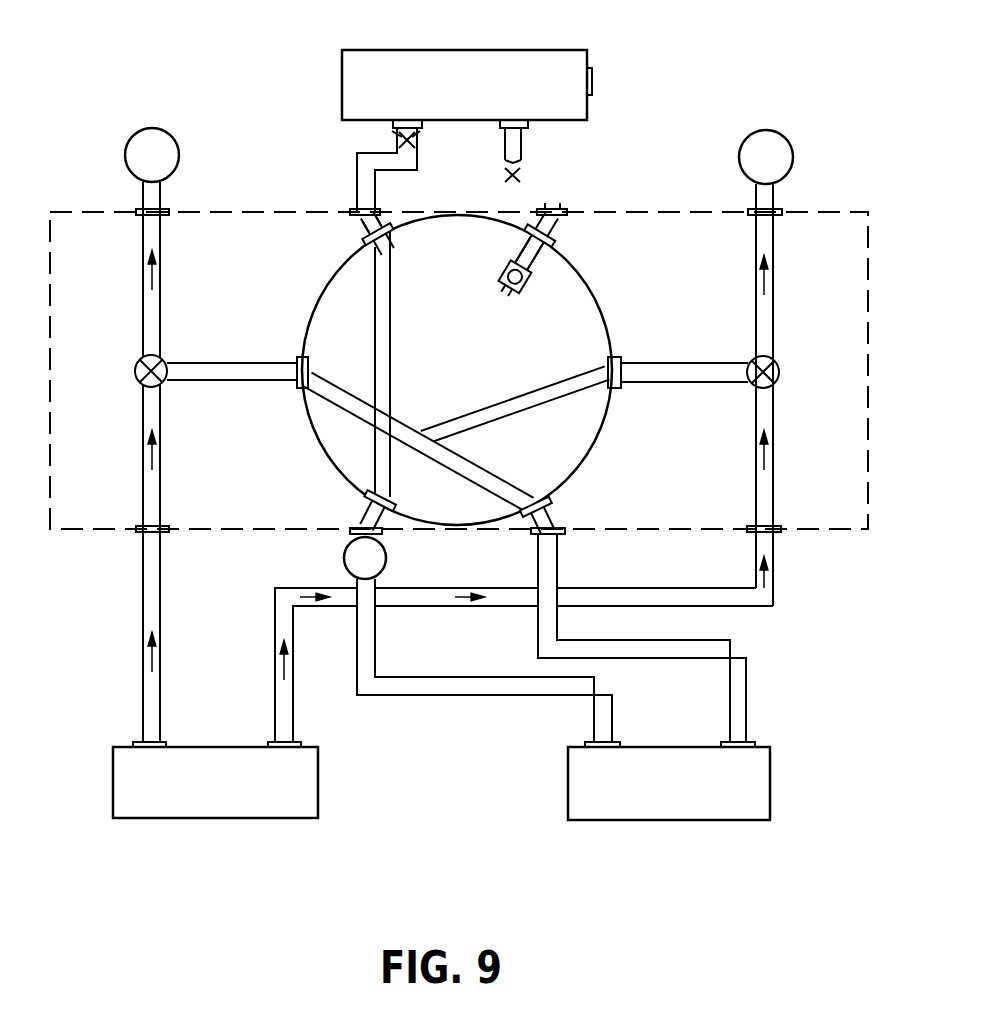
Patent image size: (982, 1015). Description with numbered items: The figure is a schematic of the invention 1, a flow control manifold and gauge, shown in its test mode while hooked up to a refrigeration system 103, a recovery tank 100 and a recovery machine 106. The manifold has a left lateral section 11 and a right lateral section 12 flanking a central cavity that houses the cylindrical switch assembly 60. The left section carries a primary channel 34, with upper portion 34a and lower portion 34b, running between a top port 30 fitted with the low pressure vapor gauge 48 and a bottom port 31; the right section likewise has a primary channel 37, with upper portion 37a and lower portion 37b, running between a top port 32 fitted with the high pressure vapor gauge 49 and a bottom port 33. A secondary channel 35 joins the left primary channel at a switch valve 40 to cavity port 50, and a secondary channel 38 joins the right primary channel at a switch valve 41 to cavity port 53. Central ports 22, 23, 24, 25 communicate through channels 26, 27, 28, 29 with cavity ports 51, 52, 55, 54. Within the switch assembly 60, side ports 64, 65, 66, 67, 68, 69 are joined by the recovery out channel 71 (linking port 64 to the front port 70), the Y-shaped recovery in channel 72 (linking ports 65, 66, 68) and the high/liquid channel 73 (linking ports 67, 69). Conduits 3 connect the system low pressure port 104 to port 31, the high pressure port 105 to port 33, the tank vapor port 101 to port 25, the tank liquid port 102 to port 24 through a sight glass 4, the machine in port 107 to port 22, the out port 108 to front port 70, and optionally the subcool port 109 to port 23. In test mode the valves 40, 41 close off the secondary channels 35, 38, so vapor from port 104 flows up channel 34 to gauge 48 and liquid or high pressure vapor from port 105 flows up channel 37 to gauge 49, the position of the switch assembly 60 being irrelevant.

The invention 1 is at (873, 284).
The conduit 3 is at (357, 180).
The sight glass 4 is at (388, 563).
The left lateral section 11 is at (274, 245).
The right lateral section 12 is at (688, 249).
The left top port 22 is at (386, 210).
The right top port 23 is at (565, 209).
The left bottom port 24 is at (352, 533).
The right bottom port 25 is at (562, 530).
The left top channel 26 is at (365, 242).
The right top channel 27 is at (552, 222).
The left bottom channel 28 is at (363, 515).
The right bottom channel 29 is at (550, 515).
The top left lateral port 30 is at (167, 210).
The left lateral bottom port 31 is at (168, 532).
The top right lateral port 32 is at (783, 208).
The right lateral bottom port 33 is at (775, 533).
The left lateral primary channel 34 is at (143, 310).
The left lateral primary channel upper portion 34a is at (160, 310).
The left lateral primary channel lower portion 34b is at (160, 485).
The left lateral secondary channel 35 is at (212, 362).
The right lateral primary channel 37 is at (757, 278).
The right lateral primary channel upper portion 37a is at (773, 302).
The right lateral primary channel lower portion 37b is at (773, 478).
The right lateral secondary channel 38 is at (675, 363).
The left switch valve 40 is at (160, 358).
The right switch valve 41 is at (778, 365).
The low pressure vapor gauge 48 is at (160, 128).
The high pressure vapor gauge 49 is at (785, 133).
The cavity port 50 is at (302, 392).
The cavity port 51 is at (362, 247).
The cavity port 52 is at (555, 243).
The cavity port 53 is at (620, 357).
The cavity port 54 is at (552, 500).
The cavity port 55 is at (368, 500).
The switch assembly 60 is at (459, 306).
The first assembly port 64 is at (527, 236).
The second assembly port 65 is at (606, 362).
The third assembly port 66 is at (545, 492).
The fourth assembly port 67 is at (392, 507).
The fifth assembly port 68 is at (308, 393).
The sixth assembly port 69 is at (370, 262).
The seventh assembly port 70 is at (520, 297).
The recovery out channel 71 is at (538, 268).
The recovery in channel 72 is at (463, 410).
The high/liquid channel 73 is at (391, 375).
The recovery tank 100 is at (770, 805).
The vapor port 101 is at (754, 742).
The liquid port 102 is at (617, 742).
The refrigeration system 103 is at (113, 790).
The low pressure port 104 is at (163, 742).
The high pressure port 105 is at (297, 742).
The recovery machine 106 is at (495, 50).
The in port 107 is at (398, 138).
The out port 108 is at (493, 123).
The subcool port 109 is at (593, 82).